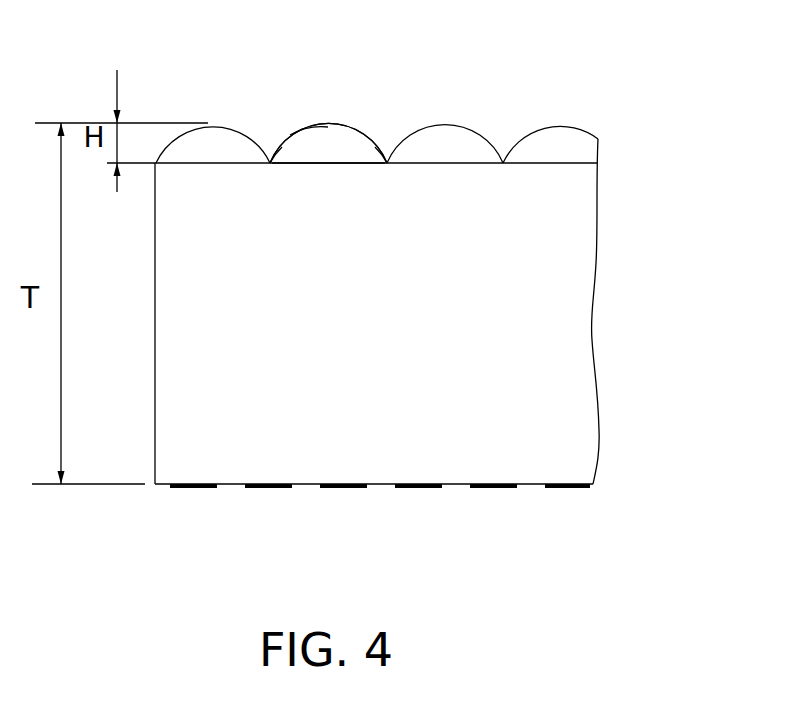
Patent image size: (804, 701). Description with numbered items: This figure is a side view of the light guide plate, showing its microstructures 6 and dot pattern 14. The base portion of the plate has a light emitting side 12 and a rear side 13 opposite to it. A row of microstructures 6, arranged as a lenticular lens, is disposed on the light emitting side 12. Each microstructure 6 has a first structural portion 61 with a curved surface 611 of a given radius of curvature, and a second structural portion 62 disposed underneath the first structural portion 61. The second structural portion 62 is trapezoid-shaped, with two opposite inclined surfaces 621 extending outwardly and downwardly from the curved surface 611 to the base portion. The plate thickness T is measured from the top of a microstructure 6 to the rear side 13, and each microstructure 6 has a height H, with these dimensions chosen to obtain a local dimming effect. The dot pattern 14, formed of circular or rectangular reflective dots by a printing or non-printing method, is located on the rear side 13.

The microstructures 6 is at (199, 106).
The first structural portion 61 is at (330, 137).
The curved surface 611 is at (307, 128).
The second structural portion 62 is at (327, 157).
The inclined surface 621 is at (277, 152).
The light emitting side 12 is at (563, 165).
The rear side 13 is at (305, 487).
The dot pattern 14 is at (268, 500).